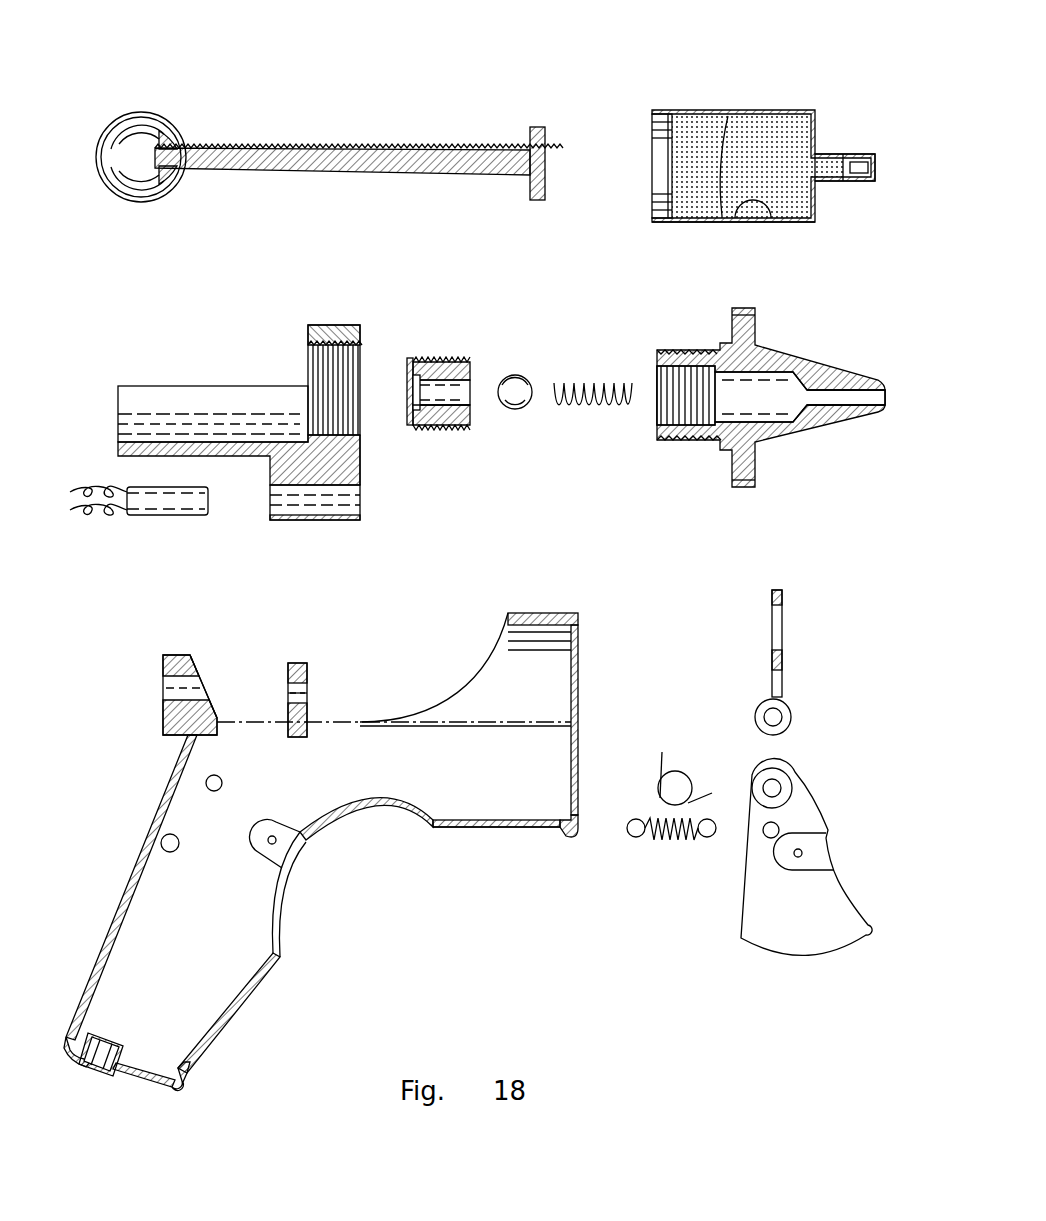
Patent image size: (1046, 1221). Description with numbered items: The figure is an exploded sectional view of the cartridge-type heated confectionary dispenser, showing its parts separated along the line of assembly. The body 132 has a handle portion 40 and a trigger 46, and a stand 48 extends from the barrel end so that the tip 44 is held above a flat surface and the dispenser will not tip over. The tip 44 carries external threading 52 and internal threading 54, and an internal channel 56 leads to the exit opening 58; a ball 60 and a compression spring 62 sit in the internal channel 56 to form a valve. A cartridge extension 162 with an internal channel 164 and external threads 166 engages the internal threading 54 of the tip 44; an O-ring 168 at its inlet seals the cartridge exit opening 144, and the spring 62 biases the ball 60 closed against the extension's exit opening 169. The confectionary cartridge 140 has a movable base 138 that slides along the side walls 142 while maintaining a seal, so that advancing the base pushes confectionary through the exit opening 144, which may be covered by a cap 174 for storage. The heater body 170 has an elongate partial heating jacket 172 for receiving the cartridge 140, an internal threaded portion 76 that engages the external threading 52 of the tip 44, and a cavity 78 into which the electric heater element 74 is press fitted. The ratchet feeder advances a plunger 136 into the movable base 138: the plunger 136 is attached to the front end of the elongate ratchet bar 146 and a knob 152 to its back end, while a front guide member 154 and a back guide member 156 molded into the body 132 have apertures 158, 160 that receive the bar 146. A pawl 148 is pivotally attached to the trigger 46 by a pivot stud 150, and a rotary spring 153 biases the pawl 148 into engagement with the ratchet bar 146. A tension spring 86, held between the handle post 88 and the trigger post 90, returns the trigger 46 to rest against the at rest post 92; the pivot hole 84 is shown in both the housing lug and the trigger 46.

The handle portion 40 is at (285, 895).
The tip 44 is at (790, 345).
The trigger 46 is at (745, 918).
The stand 48 is at (565, 838).
The external threading 52 is at (700, 362).
The internal threading 54 is at (668, 410).
The internal channel 56 is at (772, 400).
The exit opening 58 is at (882, 397).
The ball 60 is at (515, 375).
The compression spring 62 is at (575, 385).
The heater element 74 is at (148, 520).
The internal threaded portion 76 is at (330, 375).
The cavity 78 is at (300, 505).
The pivot hole 84 is at (277, 842).
The tension spring 86 is at (648, 838).
The handle post 88 is at (165, 840).
The trigger post 90 is at (766, 834).
The at rest post 92 is at (210, 780).
The body 132 is at (530, 612).
The plunger 136 is at (535, 125).
The movable base 138 is at (652, 160).
The confectionary cartridge 140 is at (688, 220).
The side walls 142 is at (728, 220).
The exit opening 144 is at (830, 181).
The elongate ratchet bar 146 is at (270, 172).
The pawl 148 is at (782, 680).
The pivot stud 150 is at (775, 788).
The knob 152 is at (130, 142).
The rotary spring 153 is at (672, 772).
The front guide member 154 is at (298, 690).
The back guide member 156 is at (210, 680).
The aperture 158 is at (305, 690).
The aperture 160 is at (175, 695).
The cartridge extension 162 is at (410, 358).
The internal channel 164 is at (465, 418).
The external threads 166 is at (430, 368).
The O-ring 168 is at (432, 425).
The exit opening 169 is at (478, 408).
The heater body 170 is at (365, 475).
The elongate partial heating jacket 172 is at (150, 444).
The cap 174 is at (835, 150).